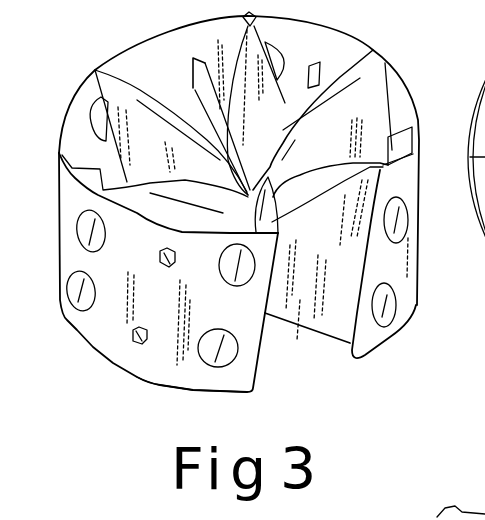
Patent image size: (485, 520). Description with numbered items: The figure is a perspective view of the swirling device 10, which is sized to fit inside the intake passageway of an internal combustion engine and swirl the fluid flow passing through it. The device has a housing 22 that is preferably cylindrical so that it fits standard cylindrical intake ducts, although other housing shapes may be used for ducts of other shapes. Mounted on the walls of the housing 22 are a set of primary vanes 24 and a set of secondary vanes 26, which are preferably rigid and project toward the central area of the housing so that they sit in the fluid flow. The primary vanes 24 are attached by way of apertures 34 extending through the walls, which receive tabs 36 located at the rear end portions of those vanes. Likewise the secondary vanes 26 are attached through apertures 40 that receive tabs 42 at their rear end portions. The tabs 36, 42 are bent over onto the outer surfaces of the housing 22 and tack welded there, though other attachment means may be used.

The swirling device 10 is at (333, 378).
The housing 22 is at (416, 77).
The primary vanes 24 is at (360, 80).
The secondary vanes 26 is at (200, 65).
The apertures 34 is at (225, 362).
The tabs 36 is at (205, 370).
The apertures 40 is at (139, 344).
The tabs 42 is at (162, 262).